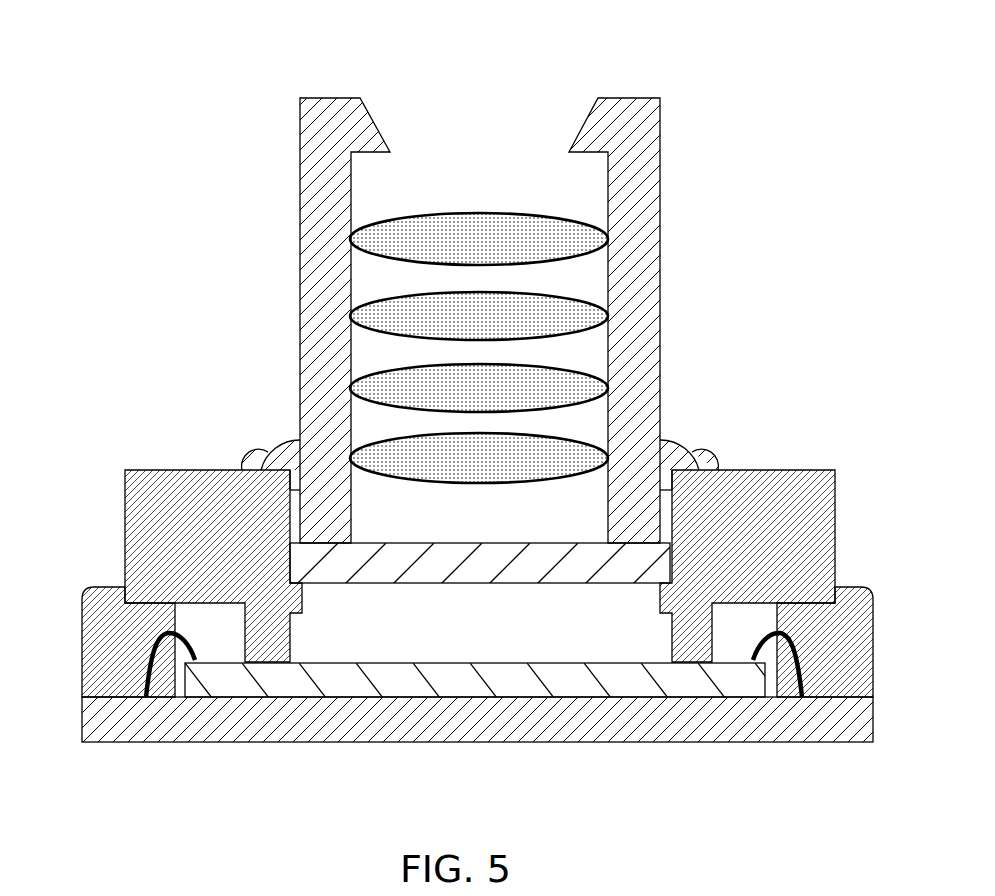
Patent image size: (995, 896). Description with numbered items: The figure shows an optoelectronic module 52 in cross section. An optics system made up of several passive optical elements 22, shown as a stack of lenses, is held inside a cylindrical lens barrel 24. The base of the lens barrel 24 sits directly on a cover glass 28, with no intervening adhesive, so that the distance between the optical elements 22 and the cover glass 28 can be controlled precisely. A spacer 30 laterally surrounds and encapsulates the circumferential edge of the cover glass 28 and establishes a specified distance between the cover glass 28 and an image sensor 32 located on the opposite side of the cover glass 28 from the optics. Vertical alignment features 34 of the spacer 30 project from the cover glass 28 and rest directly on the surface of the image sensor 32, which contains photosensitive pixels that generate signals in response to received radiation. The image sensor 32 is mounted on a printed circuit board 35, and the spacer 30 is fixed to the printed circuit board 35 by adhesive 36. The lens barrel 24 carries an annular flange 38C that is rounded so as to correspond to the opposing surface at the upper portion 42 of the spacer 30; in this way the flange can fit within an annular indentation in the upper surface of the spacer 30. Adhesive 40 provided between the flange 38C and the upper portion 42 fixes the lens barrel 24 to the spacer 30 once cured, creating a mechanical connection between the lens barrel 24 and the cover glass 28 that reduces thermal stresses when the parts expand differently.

The passive optical elements 22 is at (505, 300).
The lens barrel 24 is at (307, 178).
The cover glass 28 is at (432, 546).
The spacer 30 is at (128, 564).
The image sensor 32 is at (452, 670).
The vertical alignment features 34 is at (290, 647).
The printed circuit board 35 is at (298, 735).
The adhesive 36 is at (97, 653).
The flange 38C is at (290, 441).
The adhesive 40 is at (260, 451).
The upper portion of the spacer 42 is at (292, 484).
The module 52 is at (785, 187).